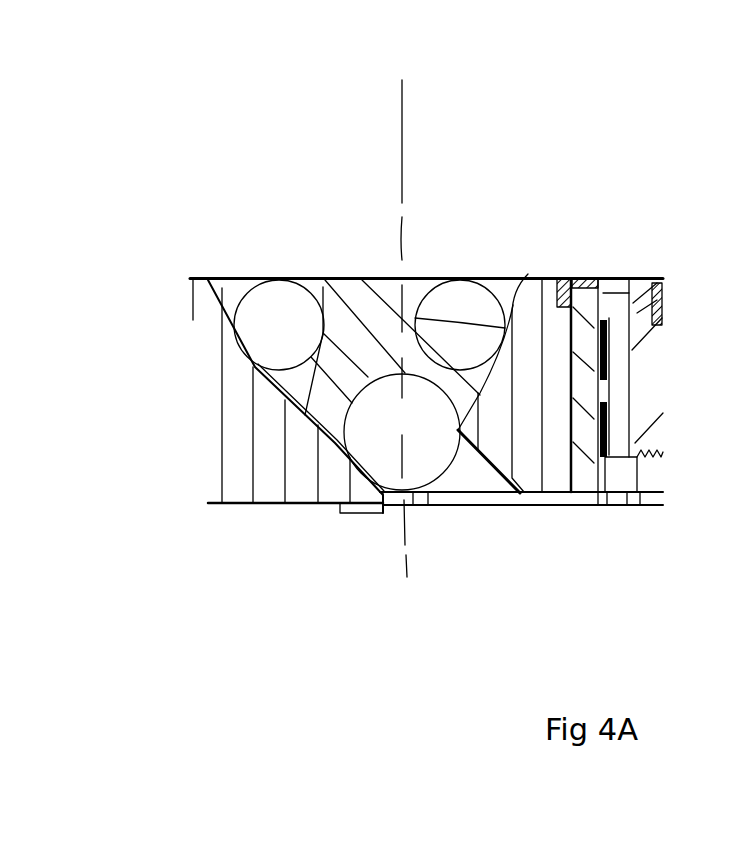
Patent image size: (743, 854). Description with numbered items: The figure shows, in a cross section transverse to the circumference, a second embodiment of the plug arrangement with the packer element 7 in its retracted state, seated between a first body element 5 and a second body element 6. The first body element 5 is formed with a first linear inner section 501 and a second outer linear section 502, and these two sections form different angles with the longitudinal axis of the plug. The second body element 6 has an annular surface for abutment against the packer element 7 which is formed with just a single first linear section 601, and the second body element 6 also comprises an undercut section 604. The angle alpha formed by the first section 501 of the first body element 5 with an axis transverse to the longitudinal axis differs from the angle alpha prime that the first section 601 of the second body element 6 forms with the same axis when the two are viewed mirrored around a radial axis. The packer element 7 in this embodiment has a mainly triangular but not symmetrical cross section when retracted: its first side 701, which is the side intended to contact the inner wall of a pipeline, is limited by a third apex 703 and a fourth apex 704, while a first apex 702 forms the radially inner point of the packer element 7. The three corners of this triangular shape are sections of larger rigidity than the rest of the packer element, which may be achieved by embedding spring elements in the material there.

The first body element 5 is at (228, 410).
The second body element 6 is at (532, 393).
The packer element 7 is at (356, 332).
The first linear inner section 501 is at (323, 287).
The second outer linear section 502 is at (222, 287).
The first linear section 601 is at (528, 274).
The undercut section 604 is at (497, 470).
The first side 701 is at (335, 297).
The first apex 702 is at (407, 580).
The third apex 703 is at (243, 287).
The fourth apex 704 is at (495, 293).